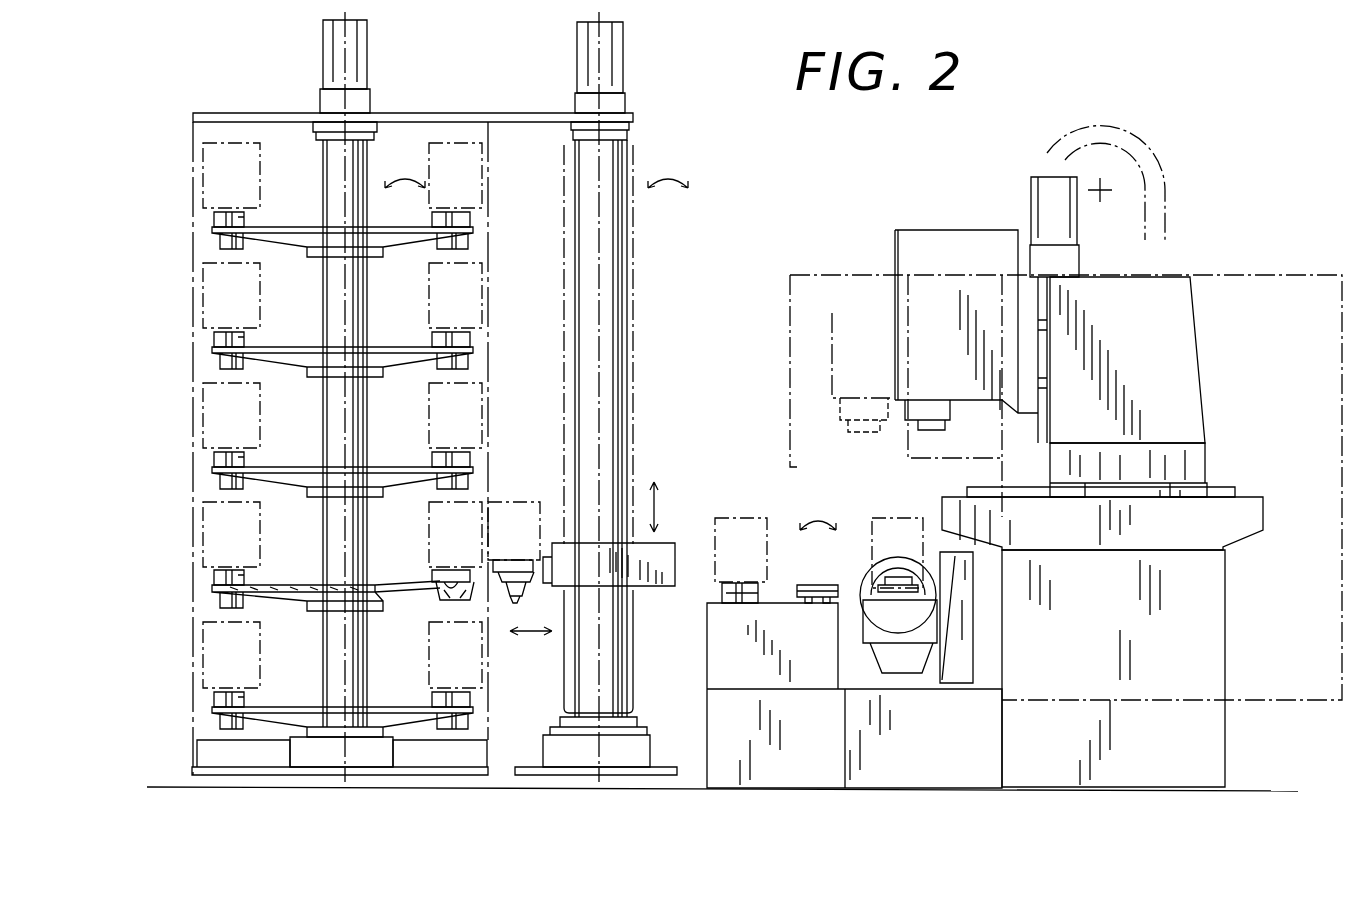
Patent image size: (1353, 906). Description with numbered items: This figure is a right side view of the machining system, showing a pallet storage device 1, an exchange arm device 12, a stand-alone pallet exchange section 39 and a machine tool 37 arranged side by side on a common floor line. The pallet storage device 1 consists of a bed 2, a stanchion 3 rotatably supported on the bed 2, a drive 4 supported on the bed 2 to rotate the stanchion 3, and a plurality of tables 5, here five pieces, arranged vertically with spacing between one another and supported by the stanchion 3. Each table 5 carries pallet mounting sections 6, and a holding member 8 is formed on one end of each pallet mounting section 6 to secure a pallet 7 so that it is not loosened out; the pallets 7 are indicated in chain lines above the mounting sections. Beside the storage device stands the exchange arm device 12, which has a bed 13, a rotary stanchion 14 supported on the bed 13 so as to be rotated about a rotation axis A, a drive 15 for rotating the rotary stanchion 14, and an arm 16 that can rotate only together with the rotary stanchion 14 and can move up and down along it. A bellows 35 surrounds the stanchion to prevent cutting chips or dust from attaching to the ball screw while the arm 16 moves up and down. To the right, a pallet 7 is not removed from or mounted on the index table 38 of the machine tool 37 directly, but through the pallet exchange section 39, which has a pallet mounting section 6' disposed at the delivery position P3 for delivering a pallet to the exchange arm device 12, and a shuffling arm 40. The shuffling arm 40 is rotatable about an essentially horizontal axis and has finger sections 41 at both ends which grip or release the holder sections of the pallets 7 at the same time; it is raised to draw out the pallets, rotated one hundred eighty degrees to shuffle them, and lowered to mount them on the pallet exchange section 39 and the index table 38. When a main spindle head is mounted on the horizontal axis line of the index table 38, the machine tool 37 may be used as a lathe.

The pallet storage device 1 is at (188, 140).
The bed 2 is at (240, 778).
The stanchion 3 is at (355, 62).
The drive 4 is at (380, 752).
The table 5 is at (286, 228).
The pallet mounting section 6 is at (338, 456).
The pallet mounting section 6' is at (722, 578).
The pallet 7 is at (480, 198).
The holding member 8 is at (222, 242).
The exchange arm device 12 is at (614, 425).
The bed 13 is at (650, 778).
The rotary stanchion 14 is at (628, 110).
The drive 15 is at (640, 747).
The arm 16 is at (655, 555).
The bellows 35 is at (633, 295).
The machine tool 37 is at (1158, 274).
The index table 38 is at (910, 662).
The pallet exchange section 39 is at (833, 724).
The shuffling arm 40 is at (826, 587).
The finger section 41 is at (818, 568).
The rotation axis A is at (600, 380).
The delivery position P3 is at (722, 612).